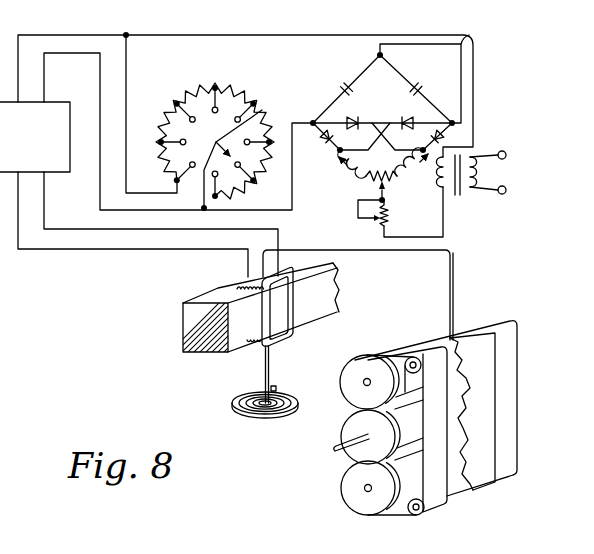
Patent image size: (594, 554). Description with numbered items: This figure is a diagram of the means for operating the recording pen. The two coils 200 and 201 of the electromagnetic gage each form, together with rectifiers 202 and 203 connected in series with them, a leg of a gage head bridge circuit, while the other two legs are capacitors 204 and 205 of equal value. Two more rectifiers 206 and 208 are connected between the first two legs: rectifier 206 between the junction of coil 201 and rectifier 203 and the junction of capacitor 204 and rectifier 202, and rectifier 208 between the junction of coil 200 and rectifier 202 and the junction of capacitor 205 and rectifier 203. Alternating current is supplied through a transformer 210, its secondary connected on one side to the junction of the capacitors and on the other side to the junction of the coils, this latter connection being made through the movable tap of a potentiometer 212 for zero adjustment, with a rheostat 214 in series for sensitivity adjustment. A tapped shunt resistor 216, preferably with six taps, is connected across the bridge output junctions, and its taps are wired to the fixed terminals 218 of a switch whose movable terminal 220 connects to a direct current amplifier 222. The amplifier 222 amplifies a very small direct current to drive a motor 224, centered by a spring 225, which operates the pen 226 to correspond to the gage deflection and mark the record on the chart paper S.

The coil 200 is at (365, 174).
The coil 201 is at (414, 176).
The rectifier 202 is at (338, 152).
The rectifier 203 is at (433, 128).
The capacitor 204 is at (338, 82).
The capacitor 205 is at (417, 83).
The rectifier 206 is at (350, 117).
The rectifier 208 is at (397, 118).
The transformer 210 is at (460, 198).
The potentiometer 212 is at (377, 184).
The rheostat 214 is at (378, 228).
The tapped shunt resistor 216 is at (232, 141).
The fixed terminals 218 is at (191, 117).
The movable terminal 220 is at (263, 110).
The direct current amplifier 222 is at (35, 137).
The motor 224 is at (287, 331).
The spring 225 is at (268, 417).
The pen 226 is at (455, 283).
The chart paper S is at (505, 398).